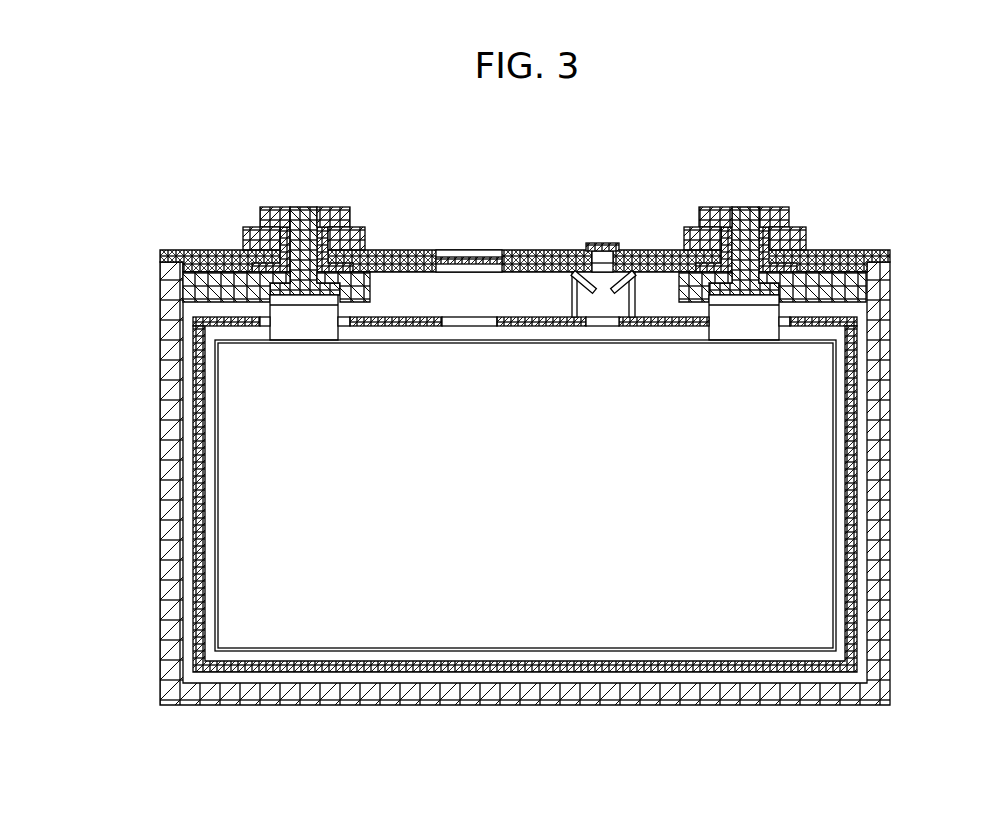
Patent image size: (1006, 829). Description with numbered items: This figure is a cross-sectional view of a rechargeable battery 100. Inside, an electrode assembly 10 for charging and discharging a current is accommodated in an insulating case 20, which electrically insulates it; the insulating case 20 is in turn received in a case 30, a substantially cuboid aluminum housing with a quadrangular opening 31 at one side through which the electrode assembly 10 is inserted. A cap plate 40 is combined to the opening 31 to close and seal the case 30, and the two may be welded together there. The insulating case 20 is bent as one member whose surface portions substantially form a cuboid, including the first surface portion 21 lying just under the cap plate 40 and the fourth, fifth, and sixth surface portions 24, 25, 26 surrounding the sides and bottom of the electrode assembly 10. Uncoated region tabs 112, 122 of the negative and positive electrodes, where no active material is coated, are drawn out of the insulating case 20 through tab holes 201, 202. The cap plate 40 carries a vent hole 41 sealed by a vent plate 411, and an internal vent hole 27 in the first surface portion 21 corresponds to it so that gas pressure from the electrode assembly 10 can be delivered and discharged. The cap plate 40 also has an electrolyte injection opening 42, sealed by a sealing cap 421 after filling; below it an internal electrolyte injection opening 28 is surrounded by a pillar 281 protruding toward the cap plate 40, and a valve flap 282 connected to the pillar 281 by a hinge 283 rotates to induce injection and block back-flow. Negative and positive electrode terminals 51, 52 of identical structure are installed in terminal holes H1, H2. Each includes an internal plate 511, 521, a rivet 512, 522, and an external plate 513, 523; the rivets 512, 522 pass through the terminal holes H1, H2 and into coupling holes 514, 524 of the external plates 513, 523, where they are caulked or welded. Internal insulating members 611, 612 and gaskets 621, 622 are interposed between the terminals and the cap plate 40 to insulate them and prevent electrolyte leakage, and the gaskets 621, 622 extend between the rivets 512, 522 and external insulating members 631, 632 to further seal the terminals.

The rechargeable battery 100 is at (880, 173).
The electrode assembly 10 is at (842, 360).
The uncoated region tab 112 is at (303, 322).
The uncoated region tab 122 is at (745, 322).
The insulating case 20 is at (530, 537).
The first surface portion 21 is at (520, 322).
The fourth surface portion 24 is at (200, 550).
The fifth surface portion 25 is at (852, 612).
The sixth surface portion 26 is at (705, 668).
The internal vent hole 27 is at (470, 322).
The tab hole 201 is at (350, 322).
The tab hole 202 is at (695, 322).
The internal electrolyte injection opening 28 is at (574, 306).
The pillar 281 is at (570, 300).
The valve flap 282 is at (592, 292).
The hinge 283 is at (574, 275).
The case 30 is at (900, 518).
The opening 31 is at (857, 250).
The cap plate 40 is at (205, 257).
The vent hole 41 is at (452, 256).
The vent plate 411 is at (486, 257).
The electrolyte injection opening 42 is at (590, 258).
The sealing cap 421 is at (600, 243).
The negative electrode terminal 51 is at (218, 141).
The internal plate 511 is at (250, 240).
The rivet 512 is at (300, 222).
The external plate 513 is at (275, 222).
The coupling hole 514 is at (322, 235).
The positive electrode terminal 52 is at (725, 141).
The internal plate 521 is at (797, 240).
The rivet 522 is at (746, 222).
The external plate 523 is at (775, 222).
The coupling hole 524 is at (727, 235).
The internal insulating member 611 is at (200, 285).
The internal insulating member 612 is at (850, 288).
The gasket 621 is at (335, 218).
The gasket 622 is at (714, 218).
The external insulating member 631 is at (355, 240).
The external insulating member 632 is at (698, 240).
The terminal hole H1 is at (330, 250).
The terminal hole H2 is at (722, 250).